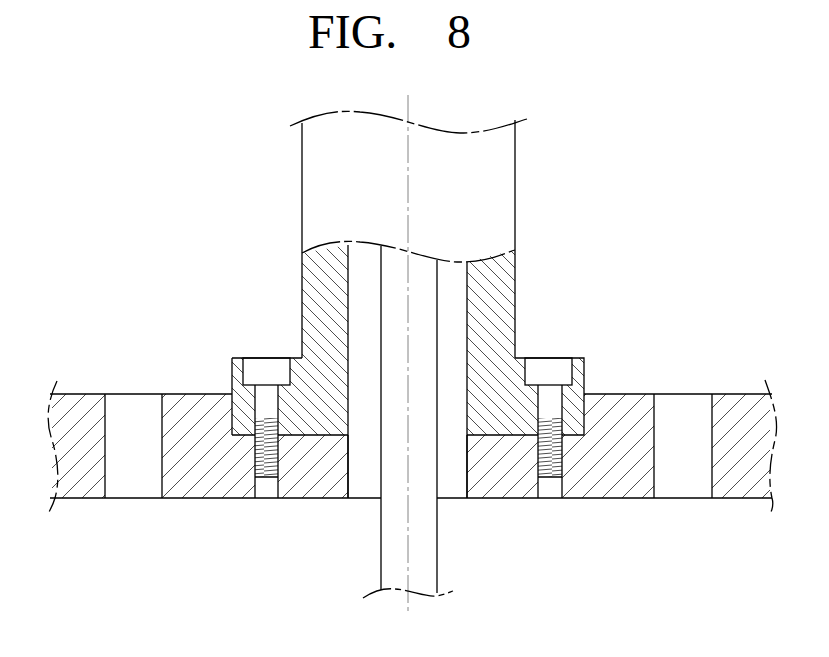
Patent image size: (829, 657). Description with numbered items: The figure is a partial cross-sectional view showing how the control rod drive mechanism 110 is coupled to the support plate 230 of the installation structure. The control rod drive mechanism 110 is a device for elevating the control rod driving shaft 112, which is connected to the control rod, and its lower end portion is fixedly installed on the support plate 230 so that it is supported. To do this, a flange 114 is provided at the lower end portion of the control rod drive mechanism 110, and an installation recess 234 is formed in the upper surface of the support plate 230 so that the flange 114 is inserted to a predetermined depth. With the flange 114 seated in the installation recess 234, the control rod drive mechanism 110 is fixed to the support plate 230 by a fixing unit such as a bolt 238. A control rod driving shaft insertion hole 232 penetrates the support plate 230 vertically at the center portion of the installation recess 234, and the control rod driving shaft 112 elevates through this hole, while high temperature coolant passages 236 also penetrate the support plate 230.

The control rod drive mechanism 110 is at (515, 172).
The control rod driving shaft 112 is at (437, 540).
The flange 114 is at (572, 408).
The support plate 230 is at (618, 485).
The control rod driving shaft insertion hole 232 is at (350, 480).
The installation recess 234 is at (490, 433).
The high temperature coolant passage 236 is at (106, 475).
The bolt 238 is at (264, 368).